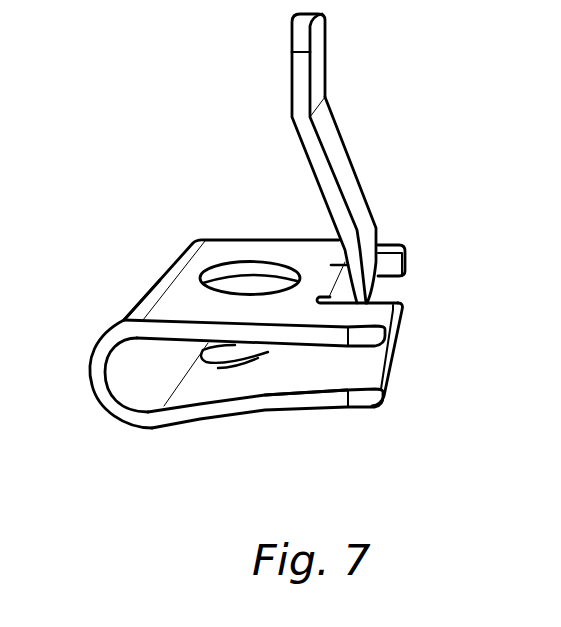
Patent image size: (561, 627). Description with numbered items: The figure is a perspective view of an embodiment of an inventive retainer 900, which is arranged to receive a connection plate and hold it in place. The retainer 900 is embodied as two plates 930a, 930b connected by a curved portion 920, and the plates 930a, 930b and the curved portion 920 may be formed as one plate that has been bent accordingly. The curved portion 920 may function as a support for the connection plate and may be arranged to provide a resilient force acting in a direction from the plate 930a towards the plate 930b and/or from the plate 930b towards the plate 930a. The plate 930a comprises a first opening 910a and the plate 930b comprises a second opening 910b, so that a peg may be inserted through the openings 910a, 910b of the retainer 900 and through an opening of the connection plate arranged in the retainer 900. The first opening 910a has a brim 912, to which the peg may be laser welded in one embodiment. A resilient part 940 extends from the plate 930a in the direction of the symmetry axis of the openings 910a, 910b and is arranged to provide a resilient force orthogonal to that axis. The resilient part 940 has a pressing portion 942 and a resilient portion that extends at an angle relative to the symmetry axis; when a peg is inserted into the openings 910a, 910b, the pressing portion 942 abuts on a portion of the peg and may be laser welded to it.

The retainer 900 is at (106, 85).
The first opening 910a is at (252, 280).
The second opening 910b is at (229, 367).
The brim 912 is at (212, 280).
The curved portion 920 is at (138, 373).
The plate 930a is at (204, 318).
The plate 930b is at (265, 398).
The resilient part 940 is at (347, 190).
The pressing portion 942 is at (297, 78).